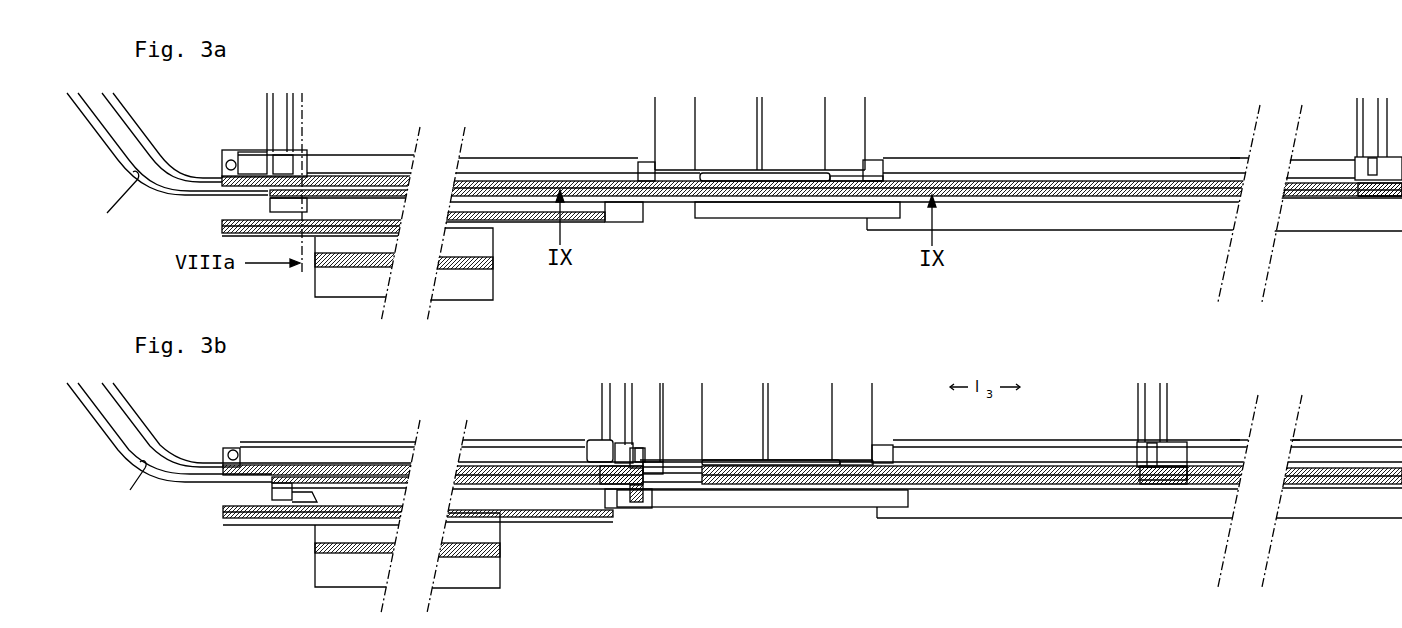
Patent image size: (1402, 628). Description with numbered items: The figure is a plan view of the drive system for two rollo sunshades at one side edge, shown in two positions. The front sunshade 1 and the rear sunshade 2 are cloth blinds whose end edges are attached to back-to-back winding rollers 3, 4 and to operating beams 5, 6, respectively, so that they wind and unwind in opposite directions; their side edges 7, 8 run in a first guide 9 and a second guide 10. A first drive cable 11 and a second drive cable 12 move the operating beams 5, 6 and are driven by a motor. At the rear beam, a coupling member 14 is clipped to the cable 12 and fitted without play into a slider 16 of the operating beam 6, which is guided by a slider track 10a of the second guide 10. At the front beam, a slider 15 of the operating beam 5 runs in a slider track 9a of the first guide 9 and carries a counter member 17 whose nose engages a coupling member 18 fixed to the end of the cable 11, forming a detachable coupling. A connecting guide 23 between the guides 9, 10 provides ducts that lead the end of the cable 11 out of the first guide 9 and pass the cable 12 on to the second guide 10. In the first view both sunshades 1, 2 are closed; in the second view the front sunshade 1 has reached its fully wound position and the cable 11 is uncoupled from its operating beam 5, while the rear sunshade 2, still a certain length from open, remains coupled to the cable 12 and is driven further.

In FIG. 3A, the front sunshade 1 is at (518, 77).
In FIG. 3B, the front sunshade 1 is at (645, 405).
In FIG. 3A, the rear sunshade 2 is at (1066, 117).
In FIG. 3B, the rear sunshade 2 is at (914, 428).
In FIG. 3A, the winding roller 3 is at (719, 113).
In FIG. 3B, the winding roller 3 is at (745, 445).
In FIG. 3A, the winding roller 4 is at (787, 113).
In FIG. 3B, the winding roller 4 is at (807, 440).
In FIG. 3A, the operating beam 5 is at (283, 118).
In FIG. 3B, the operating beam 5 is at (603, 395).
In FIG. 3A, the operating beam 6 is at (1372, 118).
In FIG. 3B, the operating beam 6 is at (1160, 400).
In FIG. 3A, the side edge 7 is at (645, 162).
In FIG. 3B, the side edge 7 is at (660, 447).
In FIG. 3A, the side edge 8 is at (875, 168).
In FIG. 3B, the side edge 8 is at (880, 445).
In FIG. 3A, the first guide 9 is at (623, 212).
In FIG. 3B, the first guide 9 is at (641, 482).
In FIG. 3B, the slider track 9a is at (263, 452).
In FIG. 3A, the second guide 10 is at (1068, 212).
In FIG. 3B, the second guide 10 is at (1035, 505).
In FIG. 3B, the slider track 10a is at (1340, 456).
In FIG. 3A, the first drive cable 11 is at (117, 207).
In FIG. 3B, the first drive cable 11 is at (600, 456).
In FIG. 3A, the second drive cable 12 is at (123, 130).
In FIG. 3B, the second drive cable 12 is at (128, 432).
In FIG. 3A, the coupling member 14 is at (1372, 182).
In FIG. 3B, the coupling member 14 is at (1178, 478).
In FIG. 3A, the slider 15 is at (273, 168).
In FIG. 3B, the slider 15 is at (607, 463).
In FIG. 3A, the slider 16 is at (1390, 167).
In FIG. 3B, the slider 16 is at (1180, 475).
In FIG. 3B, the counter member 17 is at (655, 475).
In FIG. 3B, the coupling member 18 is at (655, 455).
In FIG. 3A, the connecting guide 23 is at (786, 212).
In FIG. 3B, the connecting guide 23 is at (762, 504).